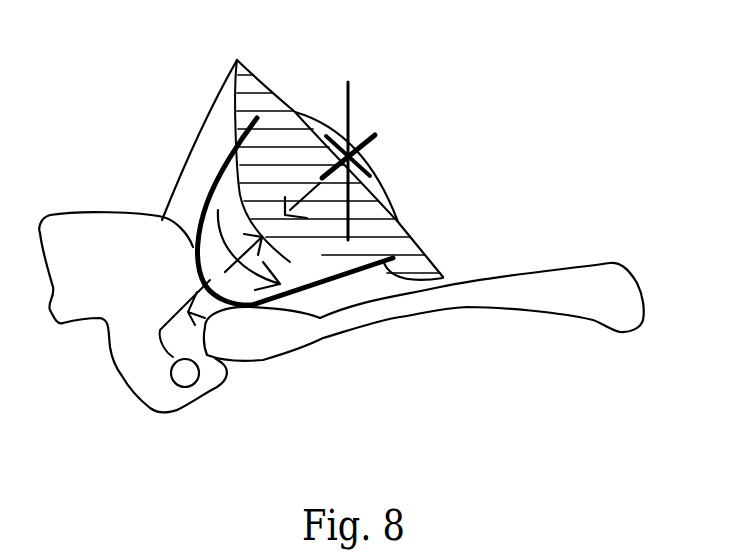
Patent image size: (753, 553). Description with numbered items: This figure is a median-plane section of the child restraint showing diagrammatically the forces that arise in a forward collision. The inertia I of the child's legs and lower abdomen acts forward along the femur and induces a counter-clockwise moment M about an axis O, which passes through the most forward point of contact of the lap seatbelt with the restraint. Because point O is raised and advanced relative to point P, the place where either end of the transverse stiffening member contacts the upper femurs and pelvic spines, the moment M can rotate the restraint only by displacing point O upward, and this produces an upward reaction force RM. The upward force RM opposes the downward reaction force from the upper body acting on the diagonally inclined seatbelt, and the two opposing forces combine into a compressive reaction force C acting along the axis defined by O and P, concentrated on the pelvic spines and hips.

The point of contact of the stiffening member with the hips and pelvis P is at (192, 281).
The inertia of the legs I is at (133, 333).
The axis through the point of contact of the lap seatbelt with the restraint O is at (366, 154).
The upward reaction force RM is at (353, 205).
The compressive reaction force C is at (272, 227).
The moment M is at (265, 250).